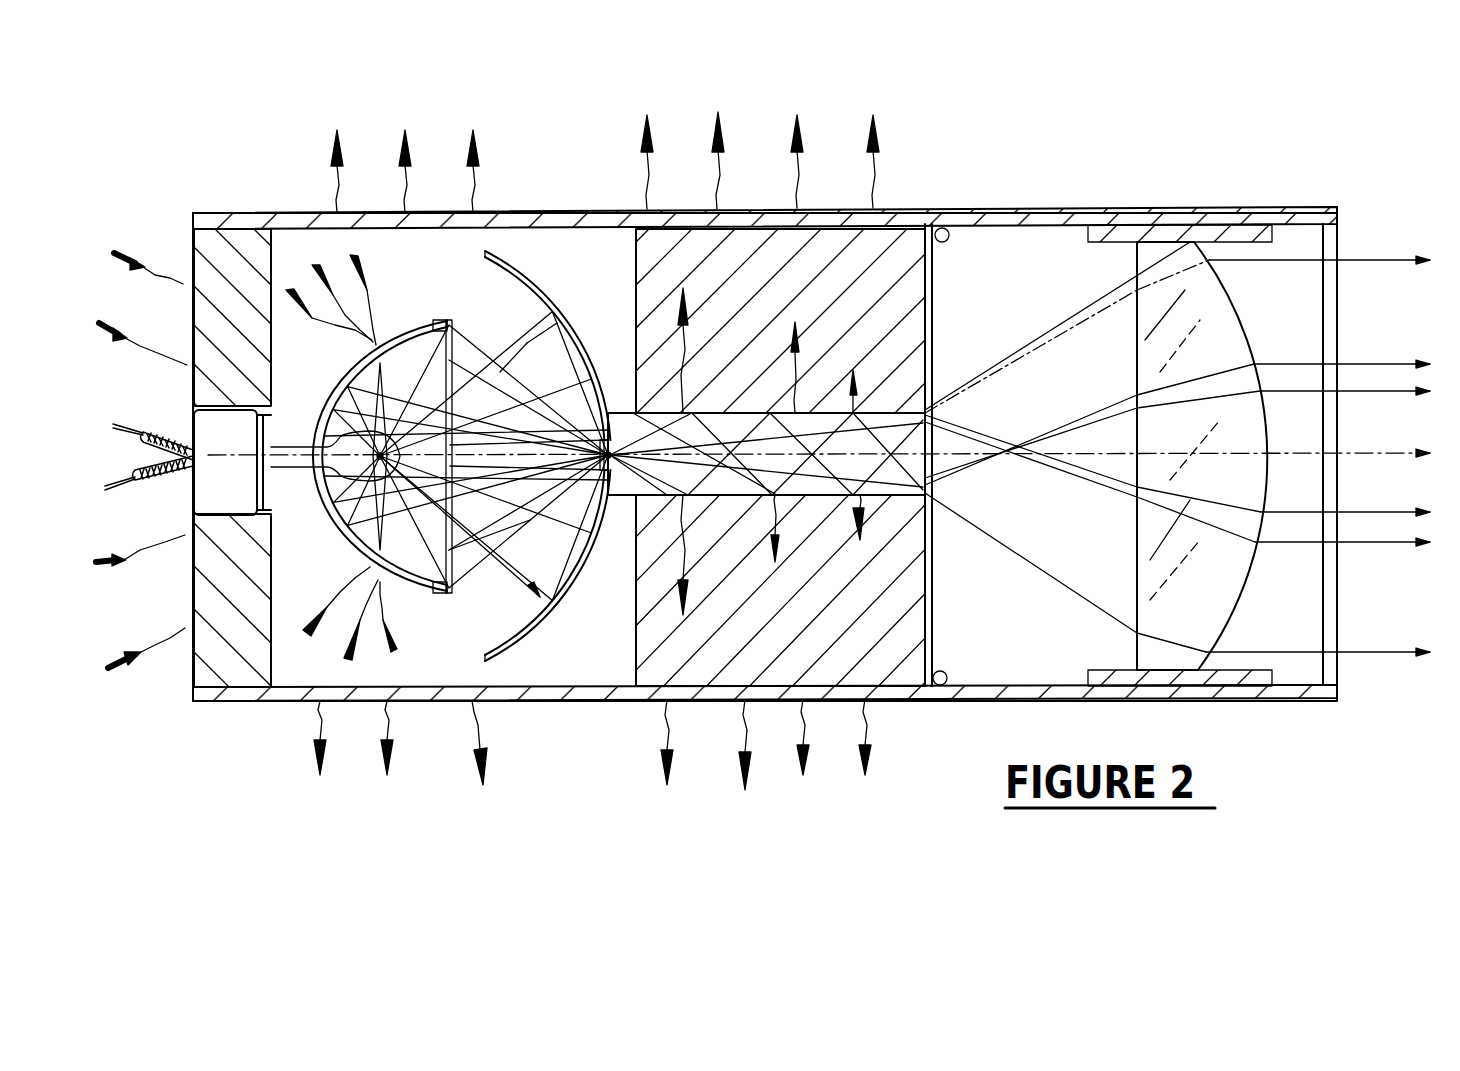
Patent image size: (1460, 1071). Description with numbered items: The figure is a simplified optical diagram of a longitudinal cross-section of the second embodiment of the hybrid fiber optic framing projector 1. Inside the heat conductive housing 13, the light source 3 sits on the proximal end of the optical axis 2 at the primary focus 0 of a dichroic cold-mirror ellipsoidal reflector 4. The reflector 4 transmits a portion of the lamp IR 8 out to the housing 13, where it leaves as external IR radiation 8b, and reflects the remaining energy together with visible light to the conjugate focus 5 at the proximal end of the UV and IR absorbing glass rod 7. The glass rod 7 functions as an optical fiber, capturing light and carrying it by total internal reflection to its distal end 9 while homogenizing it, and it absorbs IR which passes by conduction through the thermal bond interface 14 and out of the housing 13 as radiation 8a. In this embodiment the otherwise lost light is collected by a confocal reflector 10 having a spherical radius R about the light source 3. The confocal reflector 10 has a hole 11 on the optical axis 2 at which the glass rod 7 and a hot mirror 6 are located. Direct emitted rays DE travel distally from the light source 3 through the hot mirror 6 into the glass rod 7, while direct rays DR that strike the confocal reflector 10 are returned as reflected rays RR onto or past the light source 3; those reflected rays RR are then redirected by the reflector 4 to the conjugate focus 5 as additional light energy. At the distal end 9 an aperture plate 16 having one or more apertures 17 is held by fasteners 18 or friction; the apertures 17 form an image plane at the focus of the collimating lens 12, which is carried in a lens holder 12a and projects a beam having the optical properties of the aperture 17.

The hybrid fiber optic framing projector 1 is at (556, 185).
The heat conductive housing 13 is at (893, 208).
The thermal bond interface 14 is at (700, 413).
The aperture plate 16 is at (933, 312).
The aperture 17 is at (935, 410).
The fastener 18 is at (948, 242).
The optical axis 2 is at (650, 456).
The glass rod 7 is at (755, 420).
The distal end 9 is at (942, 413).
The primary focus 0 is at (345, 515).
The light source 3 is at (460, 456).
The ellipsoidal reflector 4 is at (369, 456).
The hot mirror 6 is at (455, 350).
The confocal reflector 10 is at (557, 327).
The conjugate focus 5 is at (570, 500).
The hole 11 is at (608, 498).
The collimating lens 12 is at (1245, 318).
The lens holder 12a is at (1218, 228).
The external IR radiation 8b is at (475, 178).
The lamp IR radiation 8 is at (373, 312).
The conduction path radiation 8a is at (686, 318).
The spherical radius R is at (513, 358).
The direct emitted rays DE is at (529, 456).
The direct rays DR is at (508, 585).
The reflected rays RR is at (489, 566).